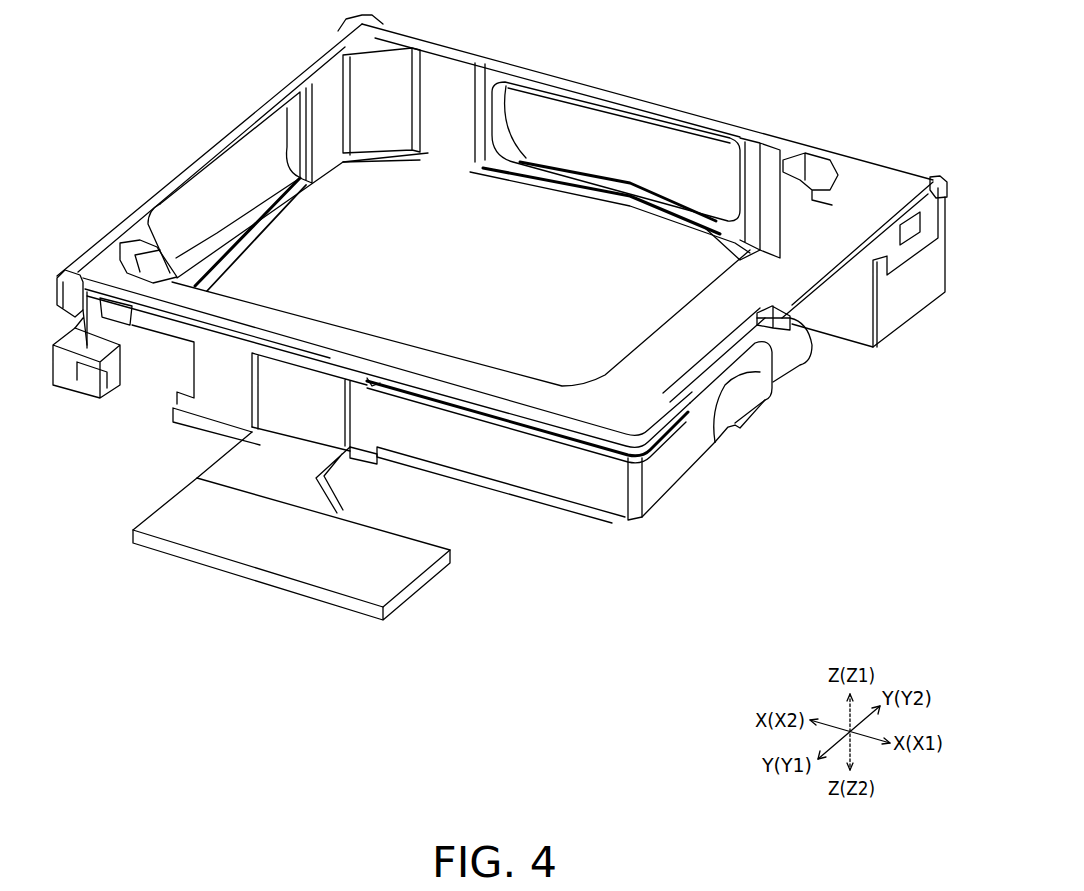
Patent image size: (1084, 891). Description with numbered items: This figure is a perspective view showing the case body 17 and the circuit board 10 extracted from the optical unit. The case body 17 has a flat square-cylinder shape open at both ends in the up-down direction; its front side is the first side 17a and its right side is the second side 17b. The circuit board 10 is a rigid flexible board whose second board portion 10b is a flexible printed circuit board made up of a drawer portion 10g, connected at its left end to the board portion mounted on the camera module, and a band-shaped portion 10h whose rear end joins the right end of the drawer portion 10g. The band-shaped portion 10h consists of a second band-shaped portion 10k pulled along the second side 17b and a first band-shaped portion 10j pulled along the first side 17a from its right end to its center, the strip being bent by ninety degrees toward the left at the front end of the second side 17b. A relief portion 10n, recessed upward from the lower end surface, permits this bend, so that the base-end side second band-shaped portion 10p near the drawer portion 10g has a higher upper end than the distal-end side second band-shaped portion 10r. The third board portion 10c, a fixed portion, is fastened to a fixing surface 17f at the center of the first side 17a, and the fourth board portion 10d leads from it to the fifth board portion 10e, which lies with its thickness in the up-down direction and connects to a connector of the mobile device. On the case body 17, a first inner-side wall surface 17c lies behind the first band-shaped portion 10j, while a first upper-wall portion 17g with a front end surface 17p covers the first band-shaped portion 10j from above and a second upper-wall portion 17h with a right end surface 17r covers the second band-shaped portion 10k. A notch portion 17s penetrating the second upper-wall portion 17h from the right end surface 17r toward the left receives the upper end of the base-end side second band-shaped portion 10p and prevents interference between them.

The case body 17 is at (572, 78).
The first upper-wall portion 17g is at (490, 385).
The second upper-wall portion 17h is at (675, 358).
The front end surface 17p is at (425, 388).
The notch portion 17s is at (772, 316).
The right end surface 17r is at (662, 437).
The first inner-side wall surface 17c is at (461, 488).
The fixing surface 17f is at (361, 460).
The first side 17a is at (415, 487).
The second side 17b is at (798, 465).
The circuit board 10 is at (601, 520).
The third board portion 10c is at (293, 385).
The fourth board portion 10d is at (207, 462).
The fifth board portion 10e is at (326, 600).
The base-end side second band-shaped portion 10p is at (722, 356).
The second board portion 10b is at (778, 380).
The drawer portion 10g is at (793, 362).
The relief portion 10n is at (730, 437).
The second band-shaped portion 10k is at (682, 498).
The distal-end side second band-shaped portion 10r is at (673, 490).
The band-shaped portion 10h is at (494, 526).
The first band-shaped portion 10j is at (512, 497).